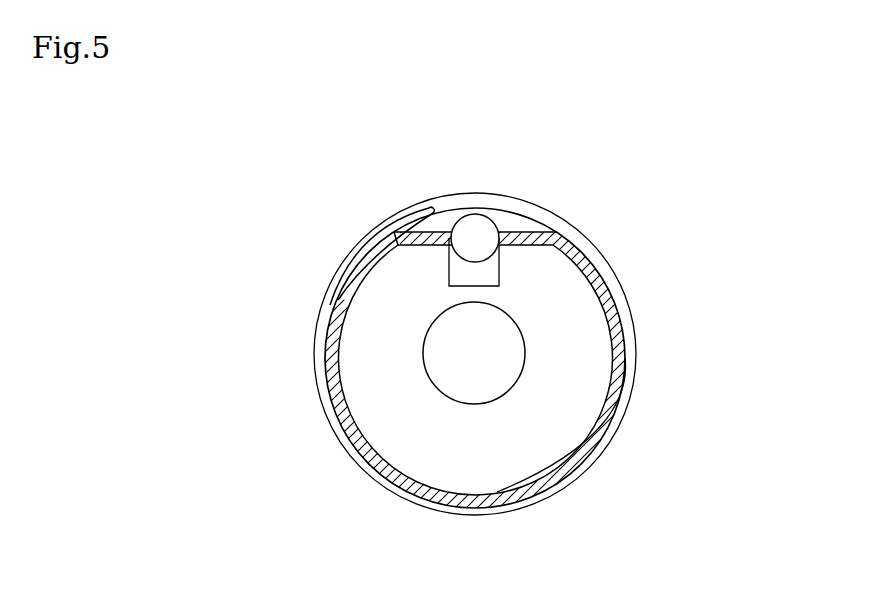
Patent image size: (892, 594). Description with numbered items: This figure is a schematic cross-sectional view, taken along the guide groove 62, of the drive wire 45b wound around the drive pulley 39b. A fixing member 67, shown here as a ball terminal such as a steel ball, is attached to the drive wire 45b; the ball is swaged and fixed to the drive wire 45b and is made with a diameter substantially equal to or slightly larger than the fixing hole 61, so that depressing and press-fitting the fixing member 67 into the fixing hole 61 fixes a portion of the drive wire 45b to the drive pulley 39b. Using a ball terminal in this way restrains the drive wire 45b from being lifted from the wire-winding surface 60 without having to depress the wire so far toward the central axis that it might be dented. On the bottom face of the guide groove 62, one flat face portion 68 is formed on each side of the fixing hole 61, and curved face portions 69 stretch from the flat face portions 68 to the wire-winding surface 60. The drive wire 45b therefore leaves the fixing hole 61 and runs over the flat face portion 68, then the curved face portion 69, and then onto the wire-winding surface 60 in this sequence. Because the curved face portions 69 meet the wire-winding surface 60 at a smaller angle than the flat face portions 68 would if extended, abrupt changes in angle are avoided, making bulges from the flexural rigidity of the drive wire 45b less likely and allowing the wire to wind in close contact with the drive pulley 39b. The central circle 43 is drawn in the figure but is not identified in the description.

The drive pulley 39b is at (584, 509).
The inner tube 43 is at (453, 366).
The drive wire 45b is at (392, 230).
The wire-winding surface 60 is at (617, 360).
The fixing hole 61 is at (462, 270).
The guide groove 62 is at (445, 224).
The fixing member 67 is at (478, 222).
The flat face portion 68 is at (525, 237).
The curved face portion 69 is at (576, 236).